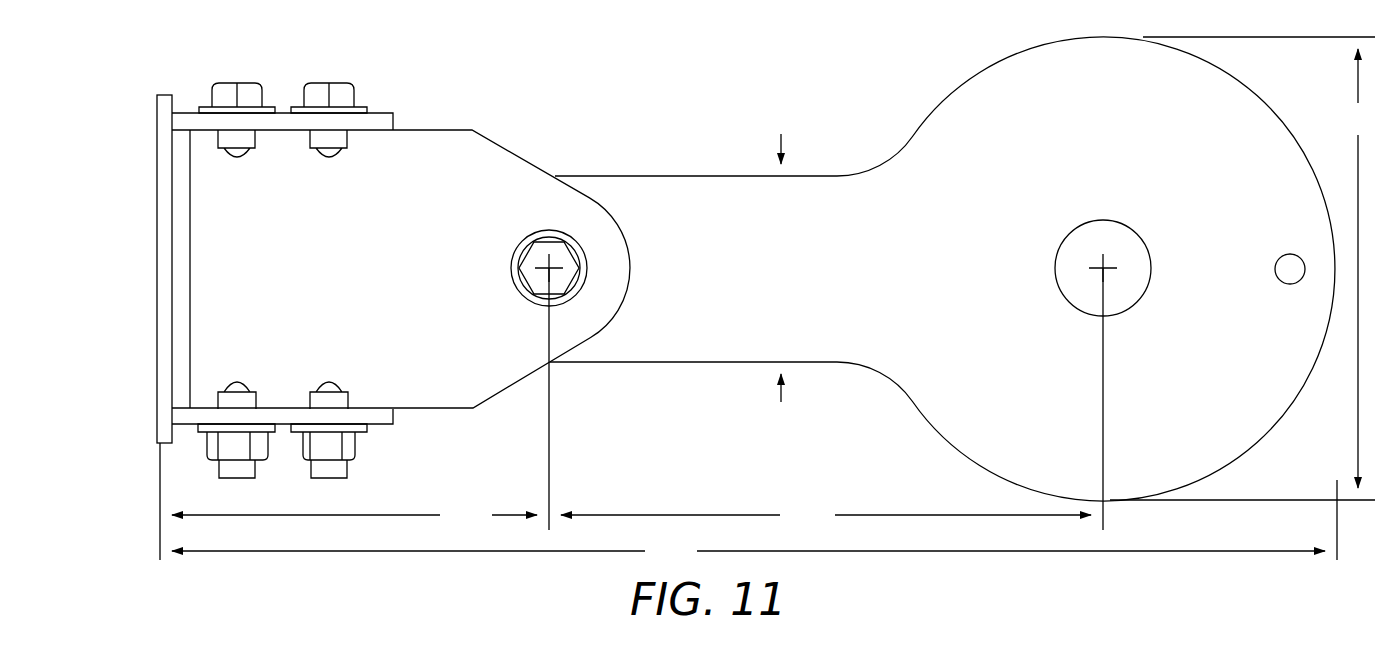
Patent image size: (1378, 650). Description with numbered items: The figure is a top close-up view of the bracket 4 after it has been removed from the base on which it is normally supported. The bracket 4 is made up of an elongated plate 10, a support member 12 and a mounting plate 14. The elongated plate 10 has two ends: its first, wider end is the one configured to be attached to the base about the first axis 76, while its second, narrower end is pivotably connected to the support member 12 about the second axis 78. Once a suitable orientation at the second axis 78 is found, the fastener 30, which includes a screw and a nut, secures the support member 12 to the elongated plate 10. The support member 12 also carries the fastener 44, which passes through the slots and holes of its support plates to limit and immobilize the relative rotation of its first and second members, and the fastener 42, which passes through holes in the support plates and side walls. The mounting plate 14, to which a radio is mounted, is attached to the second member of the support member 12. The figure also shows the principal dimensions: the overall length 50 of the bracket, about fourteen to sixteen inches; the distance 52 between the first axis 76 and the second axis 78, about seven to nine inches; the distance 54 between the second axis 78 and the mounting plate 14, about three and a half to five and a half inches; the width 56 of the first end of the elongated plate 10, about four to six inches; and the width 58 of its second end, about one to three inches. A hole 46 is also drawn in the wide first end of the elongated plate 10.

The bracket 4 is at (706, 62).
The elongated plate 10 is at (742, 176).
The support member 12 is at (460, 130).
The mounting plate 14 is at (165, 95).
The fastener 30 is at (575, 255).
The fastener 42 is at (328, 478).
The fastener 44 is at (236, 478).
The hole 46 is at (1102, 220).
The length 50 is at (754, 522).
The distance 52 is at (832, 399).
The distance 54 is at (354, 414).
The width 56 is at (1242, 268).
The width 58 is at (781, 254).
The first axis 76 is at (1092, 286).
The second axis 78 is at (536, 244).